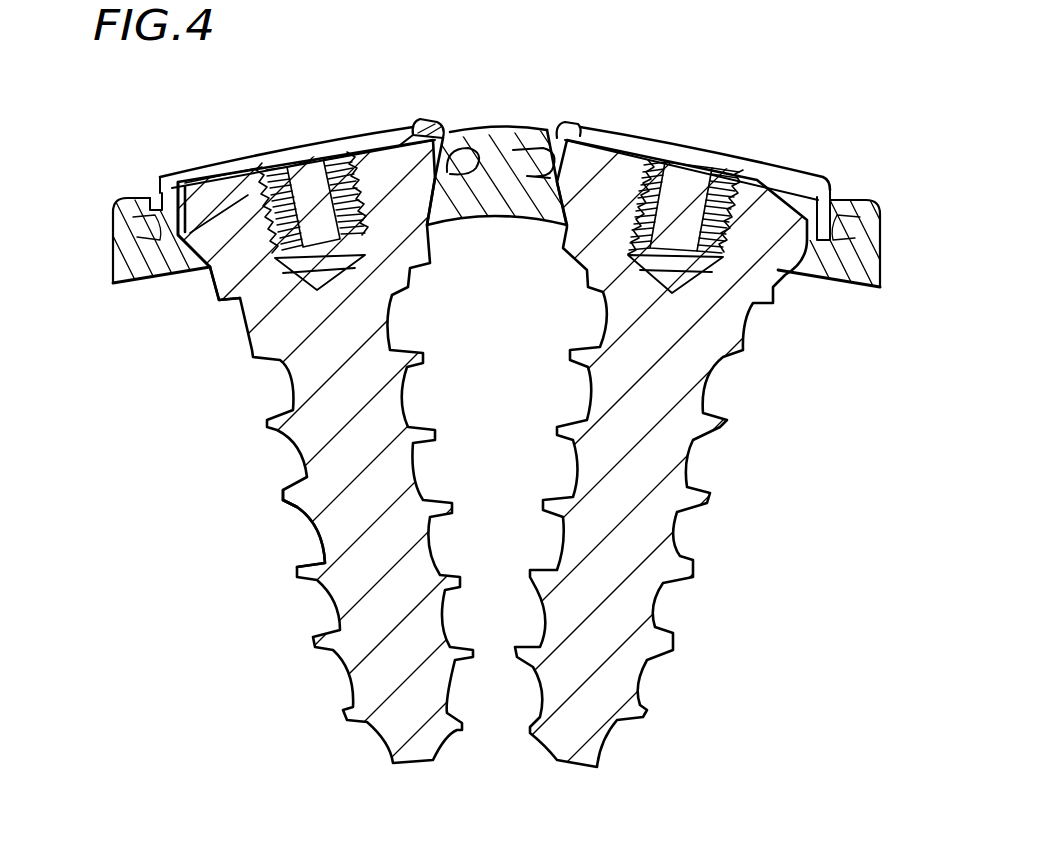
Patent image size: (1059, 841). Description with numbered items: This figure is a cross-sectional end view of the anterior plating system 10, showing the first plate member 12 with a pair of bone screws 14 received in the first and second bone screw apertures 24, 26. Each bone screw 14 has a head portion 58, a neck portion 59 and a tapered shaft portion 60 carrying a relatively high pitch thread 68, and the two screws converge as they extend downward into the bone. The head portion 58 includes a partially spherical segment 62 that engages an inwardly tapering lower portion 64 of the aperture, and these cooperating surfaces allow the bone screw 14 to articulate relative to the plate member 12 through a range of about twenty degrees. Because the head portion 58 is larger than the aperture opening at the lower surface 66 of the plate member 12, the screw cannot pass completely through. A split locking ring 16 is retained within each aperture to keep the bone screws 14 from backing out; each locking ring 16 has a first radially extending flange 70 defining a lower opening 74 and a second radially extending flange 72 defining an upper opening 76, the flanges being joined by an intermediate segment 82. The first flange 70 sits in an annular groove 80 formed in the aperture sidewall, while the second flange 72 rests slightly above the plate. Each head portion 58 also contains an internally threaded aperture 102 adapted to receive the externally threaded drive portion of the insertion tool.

The anterior plating system 10 is at (773, 110).
The first plate member 12 is at (115, 165).
The bone screws 14 is at (267, 423).
The locking rings 16 is at (433, 110).
The first bone screw aperture 24 is at (160, 207).
The second bone screw aperture 26 is at (550, 127).
The head portion 58 is at (210, 170).
The neck portion 59 is at (213, 300).
The shaft portion 60 is at (317, 527).
The partially spherical segment 62 is at (150, 240).
The inwardly tapering lower portion 64 is at (207, 270).
The lower surface 66 is at (497, 217).
The thread 68 is at (293, 490).
The first radially extending flange 70 is at (135, 202).
The second radially extending flange 72 is at (413, 128).
The lower opening 74 is at (200, 200).
The upper opening 76 is at (410, 133).
The annular groove 80 is at (480, 133).
The intermediate segment 82 is at (447, 133).
The internally threaded aperture 102 is at (267, 170).